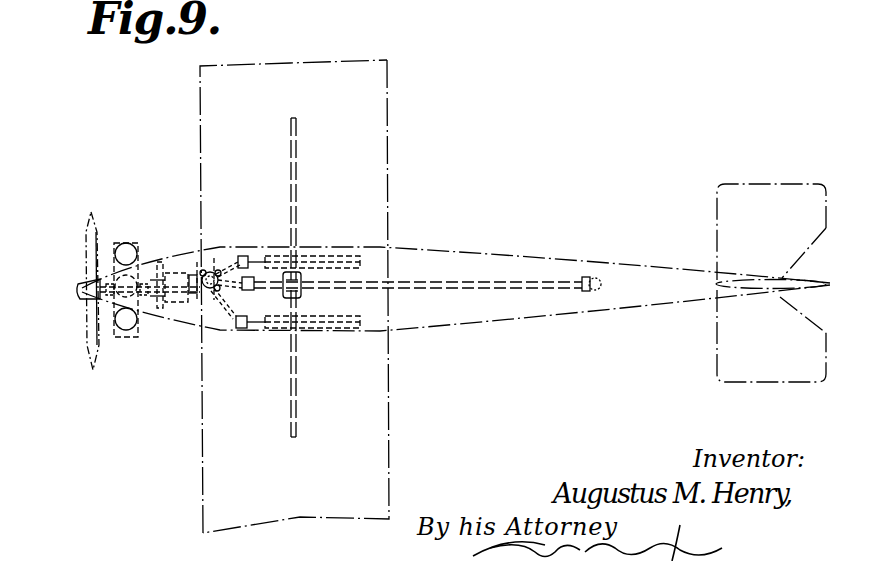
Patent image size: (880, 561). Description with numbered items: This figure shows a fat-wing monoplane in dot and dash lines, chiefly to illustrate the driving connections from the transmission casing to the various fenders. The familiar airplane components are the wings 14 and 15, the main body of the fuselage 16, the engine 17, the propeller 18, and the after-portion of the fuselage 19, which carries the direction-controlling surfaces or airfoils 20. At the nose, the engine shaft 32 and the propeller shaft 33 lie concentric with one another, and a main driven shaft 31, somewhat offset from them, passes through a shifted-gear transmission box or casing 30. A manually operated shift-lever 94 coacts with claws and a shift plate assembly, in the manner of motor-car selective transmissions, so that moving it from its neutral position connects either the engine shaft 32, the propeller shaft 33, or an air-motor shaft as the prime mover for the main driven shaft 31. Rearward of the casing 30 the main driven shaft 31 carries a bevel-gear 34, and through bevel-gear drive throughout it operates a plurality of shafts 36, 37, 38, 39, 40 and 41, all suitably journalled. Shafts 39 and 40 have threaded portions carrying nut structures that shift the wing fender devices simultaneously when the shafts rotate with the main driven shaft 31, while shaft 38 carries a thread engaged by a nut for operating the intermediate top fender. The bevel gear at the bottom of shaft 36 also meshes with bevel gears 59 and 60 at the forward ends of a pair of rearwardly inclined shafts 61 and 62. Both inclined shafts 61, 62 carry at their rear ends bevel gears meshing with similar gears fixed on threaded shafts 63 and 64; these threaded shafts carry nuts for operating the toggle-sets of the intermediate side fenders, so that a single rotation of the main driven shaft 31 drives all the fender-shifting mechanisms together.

The wing 14 is at (368, 169).
The wing 15 is at (372, 402).
The main body of the fuselage 16 is at (462, 258).
The engine 17 is at (133, 251).
The propeller 18 is at (88, 252).
The after-portion of the fuselage 19 is at (697, 278).
The direction-controlling surfaces 20 is at (784, 243).
The shifted-gear transmission box 30 is at (170, 305).
The main driven shaft 31 is at (192, 278).
The engine shaft 32 is at (105, 288).
The propeller shaft 33 is at (118, 293).
The bevel-gear 34 is at (198, 293).
The shaft 36 is at (212, 270).
The shaft 37 is at (226, 287).
The shaft 38 is at (272, 292).
The shaft 39 is at (297, 201).
The shaft 40 is at (295, 372).
The shaft 41 is at (592, 292).
The bevel gear 59 is at (226, 274).
The bevel gear 60 is at (214, 300).
The rearwardly inclined shaft 61 is at (238, 264).
The rearwardly inclined shaft 62 is at (236, 320).
The threaded shaft 63 is at (332, 260).
The threaded shaft 64 is at (336, 330).
The shift-lever 94 is at (174, 288).